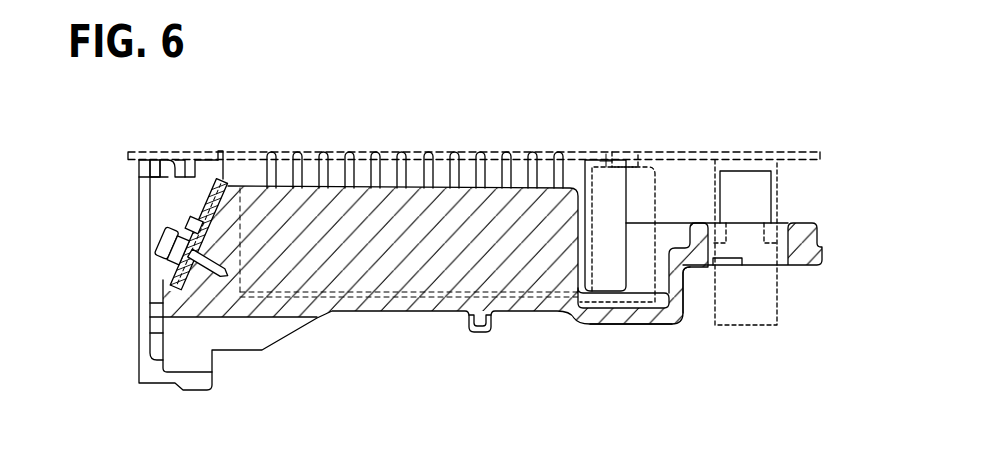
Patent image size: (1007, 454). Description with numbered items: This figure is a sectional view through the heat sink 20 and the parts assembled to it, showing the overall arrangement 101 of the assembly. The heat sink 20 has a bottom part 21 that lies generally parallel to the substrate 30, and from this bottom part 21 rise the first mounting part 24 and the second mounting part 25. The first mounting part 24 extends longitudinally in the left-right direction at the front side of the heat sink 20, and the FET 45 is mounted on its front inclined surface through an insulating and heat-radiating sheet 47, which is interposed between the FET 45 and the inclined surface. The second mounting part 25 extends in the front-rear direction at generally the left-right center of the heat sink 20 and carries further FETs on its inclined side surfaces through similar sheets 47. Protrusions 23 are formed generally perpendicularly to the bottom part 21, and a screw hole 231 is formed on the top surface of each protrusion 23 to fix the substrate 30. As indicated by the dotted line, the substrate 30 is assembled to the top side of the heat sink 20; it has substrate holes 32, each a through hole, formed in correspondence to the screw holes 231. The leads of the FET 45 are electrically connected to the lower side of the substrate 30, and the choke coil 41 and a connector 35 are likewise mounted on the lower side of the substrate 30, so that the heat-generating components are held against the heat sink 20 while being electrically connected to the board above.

The heat sink 20 is at (411, 305).
The bottom part 21 is at (597, 326).
The protrusions 23 is at (586, 170).
The screw hole 231 is at (177, 157).
The first mounting part 24 is at (207, 255).
The second mounting part 25 is at (407, 205).
The substrate 30 is at (770, 160).
The substrate holes 32 is at (607, 155).
The connector 35 is at (743, 325).
The choke coil 41 is at (633, 328).
The FET 45 is at (205, 198).
The insulating and heat-radiating sheet 47 is at (170, 274).
The electronic device 101 is at (818, 300).